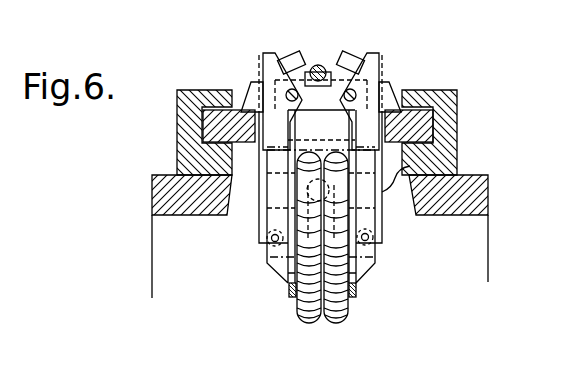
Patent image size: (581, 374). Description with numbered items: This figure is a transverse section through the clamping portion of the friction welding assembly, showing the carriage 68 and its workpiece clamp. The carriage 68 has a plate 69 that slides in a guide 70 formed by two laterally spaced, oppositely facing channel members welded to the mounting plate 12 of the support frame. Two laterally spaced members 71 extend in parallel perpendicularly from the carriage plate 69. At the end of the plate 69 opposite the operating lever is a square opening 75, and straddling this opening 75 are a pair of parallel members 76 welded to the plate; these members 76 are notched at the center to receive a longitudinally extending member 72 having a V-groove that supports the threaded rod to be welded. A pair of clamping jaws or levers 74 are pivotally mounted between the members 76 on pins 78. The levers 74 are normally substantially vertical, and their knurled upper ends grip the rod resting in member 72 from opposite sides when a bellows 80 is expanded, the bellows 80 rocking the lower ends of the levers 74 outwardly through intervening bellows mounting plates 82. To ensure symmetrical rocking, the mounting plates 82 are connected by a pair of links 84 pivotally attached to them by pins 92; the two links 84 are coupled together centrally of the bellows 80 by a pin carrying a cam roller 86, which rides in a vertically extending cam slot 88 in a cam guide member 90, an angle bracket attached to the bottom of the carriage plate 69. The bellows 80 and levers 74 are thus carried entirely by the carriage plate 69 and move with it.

The mounting plate 12 is at (475, 192).
The carriage 68 is at (386, 84).
The plate 69 is at (420, 112).
The guide 70 is at (180, 90).
The members 71 is at (263, 58).
The longitudinally extending member 72 is at (313, 62).
The clamping jaws or levers 74 is at (293, 50).
The square opening 75 is at (253, 125).
The members 76 is at (250, 92).
The pins 78 is at (321, 130).
The bellows 80 is at (337, 282).
The bellows mounting plates 82 is at (297, 300).
The links 84 is at (288, 180).
The cam roller 86 is at (262, 193).
The cam slot 88 is at (368, 205).
The cam guide member 90 is at (410, 166).
The pins 92 is at (286, 280).